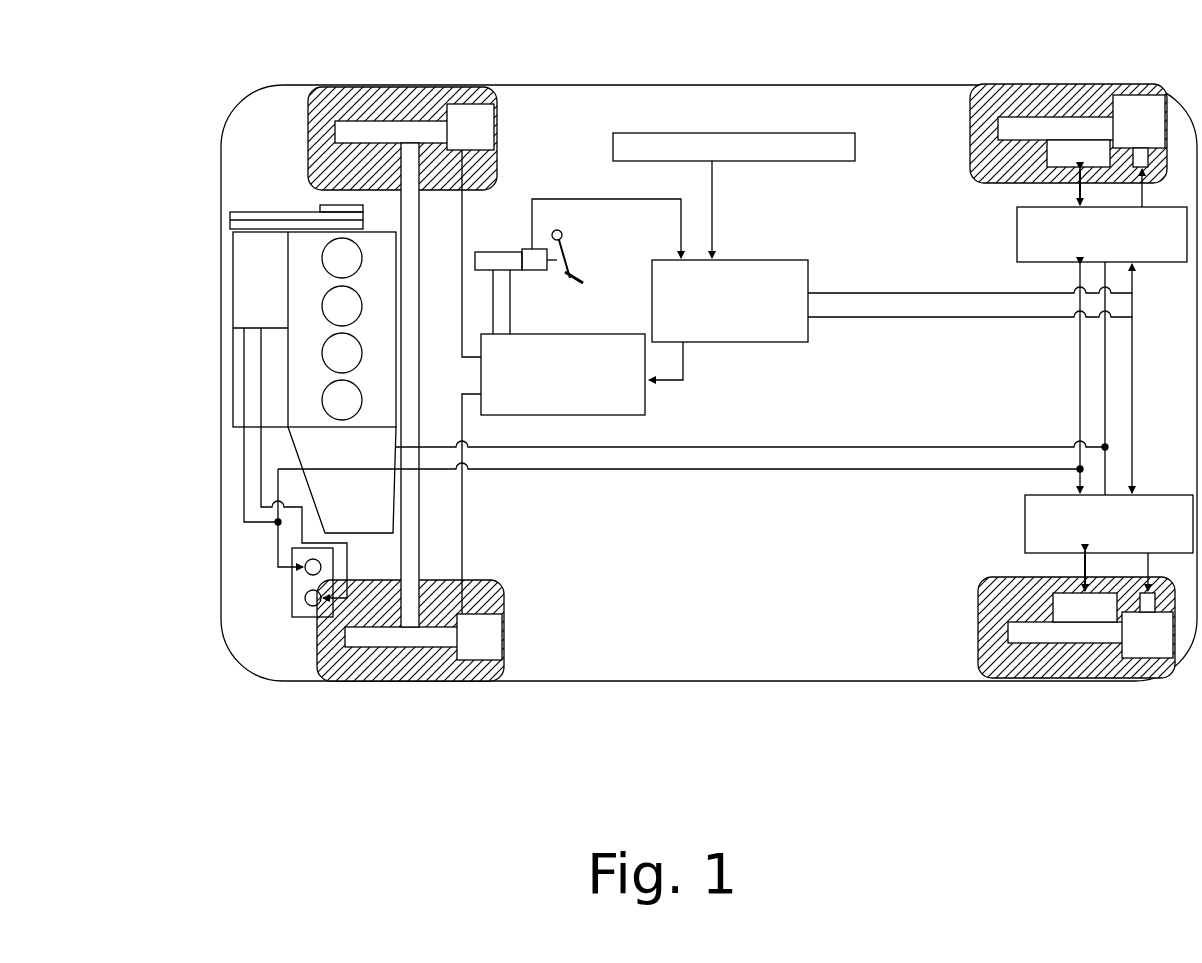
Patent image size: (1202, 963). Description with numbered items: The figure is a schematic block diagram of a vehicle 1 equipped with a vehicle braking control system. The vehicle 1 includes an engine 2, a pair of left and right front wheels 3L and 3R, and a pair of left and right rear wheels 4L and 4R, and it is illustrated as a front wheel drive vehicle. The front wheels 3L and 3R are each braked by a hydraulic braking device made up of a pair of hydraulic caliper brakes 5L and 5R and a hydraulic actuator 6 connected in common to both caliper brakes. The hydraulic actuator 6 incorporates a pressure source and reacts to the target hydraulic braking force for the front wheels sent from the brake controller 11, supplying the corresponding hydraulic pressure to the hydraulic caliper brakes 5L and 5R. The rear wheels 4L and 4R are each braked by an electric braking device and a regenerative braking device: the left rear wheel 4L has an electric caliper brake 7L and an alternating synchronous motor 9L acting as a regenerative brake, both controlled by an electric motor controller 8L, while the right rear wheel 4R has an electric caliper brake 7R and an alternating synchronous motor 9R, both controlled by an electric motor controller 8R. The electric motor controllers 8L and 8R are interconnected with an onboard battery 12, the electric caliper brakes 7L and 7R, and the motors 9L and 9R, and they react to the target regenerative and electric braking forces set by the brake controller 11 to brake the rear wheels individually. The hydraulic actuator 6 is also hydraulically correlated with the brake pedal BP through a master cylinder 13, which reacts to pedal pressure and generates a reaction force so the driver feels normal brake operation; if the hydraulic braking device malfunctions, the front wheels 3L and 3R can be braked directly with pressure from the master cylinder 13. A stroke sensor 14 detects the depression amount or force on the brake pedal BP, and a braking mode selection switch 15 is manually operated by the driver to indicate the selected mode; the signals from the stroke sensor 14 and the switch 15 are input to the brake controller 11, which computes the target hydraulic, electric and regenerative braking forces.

The vehicle 1 is at (736, 690).
The engine 2 is at (307, 373).
The right front wheel 3R is at (342, 97).
The left front wheel 3L is at (355, 657).
The right rear wheel 4R is at (1055, 92).
The left rear wheel 4L is at (1022, 657).
The hydraulic caliper brake 5R is at (468, 112).
The hydraulic caliper brake 5L is at (497, 640).
The hydraulic actuator 6 is at (645, 400).
The electric caliper brake 7R is at (1145, 110).
The electric caliper brake 7L is at (1157, 650).
The electric motor controller 8R is at (1145, 267).
The electric motor controller 8L is at (1160, 490).
The alternating synchronous motor 9R is at (1063, 155).
The alternating synchronous motor 9L is at (1067, 608).
The brake controller 11 is at (743, 342).
The onboard battery 12 is at (300, 607).
The master cylinder 13 is at (493, 252).
The stroke sensor 14 is at (538, 272).
The braking mode selection switch 15 is at (773, 161).
The brake pedal BP is at (573, 268).